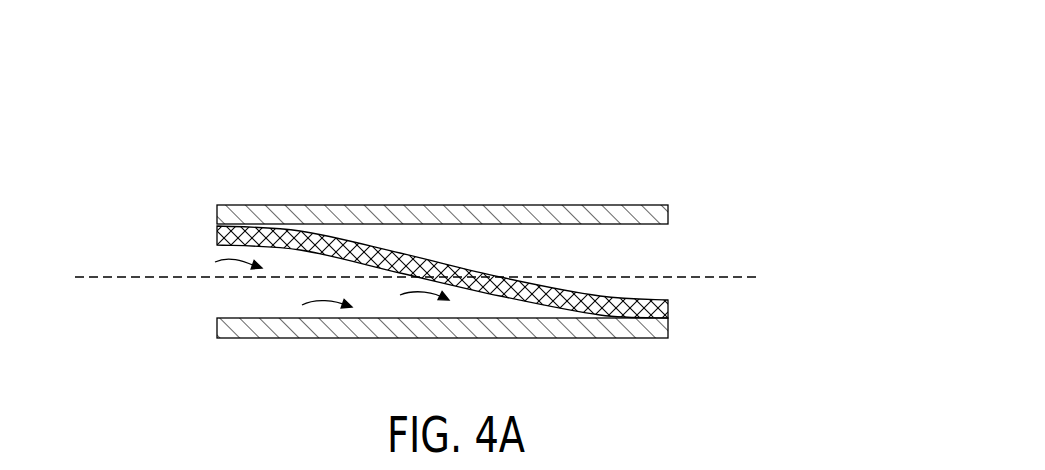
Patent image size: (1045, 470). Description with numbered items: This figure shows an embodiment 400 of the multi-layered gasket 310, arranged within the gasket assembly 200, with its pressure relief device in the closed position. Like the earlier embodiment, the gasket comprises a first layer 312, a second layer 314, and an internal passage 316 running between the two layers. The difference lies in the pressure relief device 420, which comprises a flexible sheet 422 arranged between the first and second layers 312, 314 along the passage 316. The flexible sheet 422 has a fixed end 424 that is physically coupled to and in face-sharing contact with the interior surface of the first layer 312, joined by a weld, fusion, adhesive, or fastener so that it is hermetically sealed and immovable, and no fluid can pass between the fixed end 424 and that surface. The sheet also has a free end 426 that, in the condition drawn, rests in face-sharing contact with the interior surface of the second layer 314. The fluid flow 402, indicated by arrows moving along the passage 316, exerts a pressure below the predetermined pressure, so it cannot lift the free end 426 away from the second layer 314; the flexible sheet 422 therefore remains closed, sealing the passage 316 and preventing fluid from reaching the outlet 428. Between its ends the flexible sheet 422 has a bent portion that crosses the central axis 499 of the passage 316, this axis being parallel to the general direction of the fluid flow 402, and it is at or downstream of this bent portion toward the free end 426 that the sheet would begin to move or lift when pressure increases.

The embodiment 400 is at (714, 32).
The duct assembly 200 is at (664, 117).
The multi-layered gasket 310 is at (676, 202).
The first layer 312 is at (230, 205).
The second layer 314 is at (250, 338).
The internal passage 316 is at (277, 310).
The pressure relief device 420 is at (416, 228).
The flexible sheet 422 is at (505, 280).
The fixed end 424 is at (217, 240).
The free end 426 is at (598, 320).
The outlet 428 is at (660, 261).
The fluid flow 402 is at (235, 266).
The central axis 499 is at (95, 272).